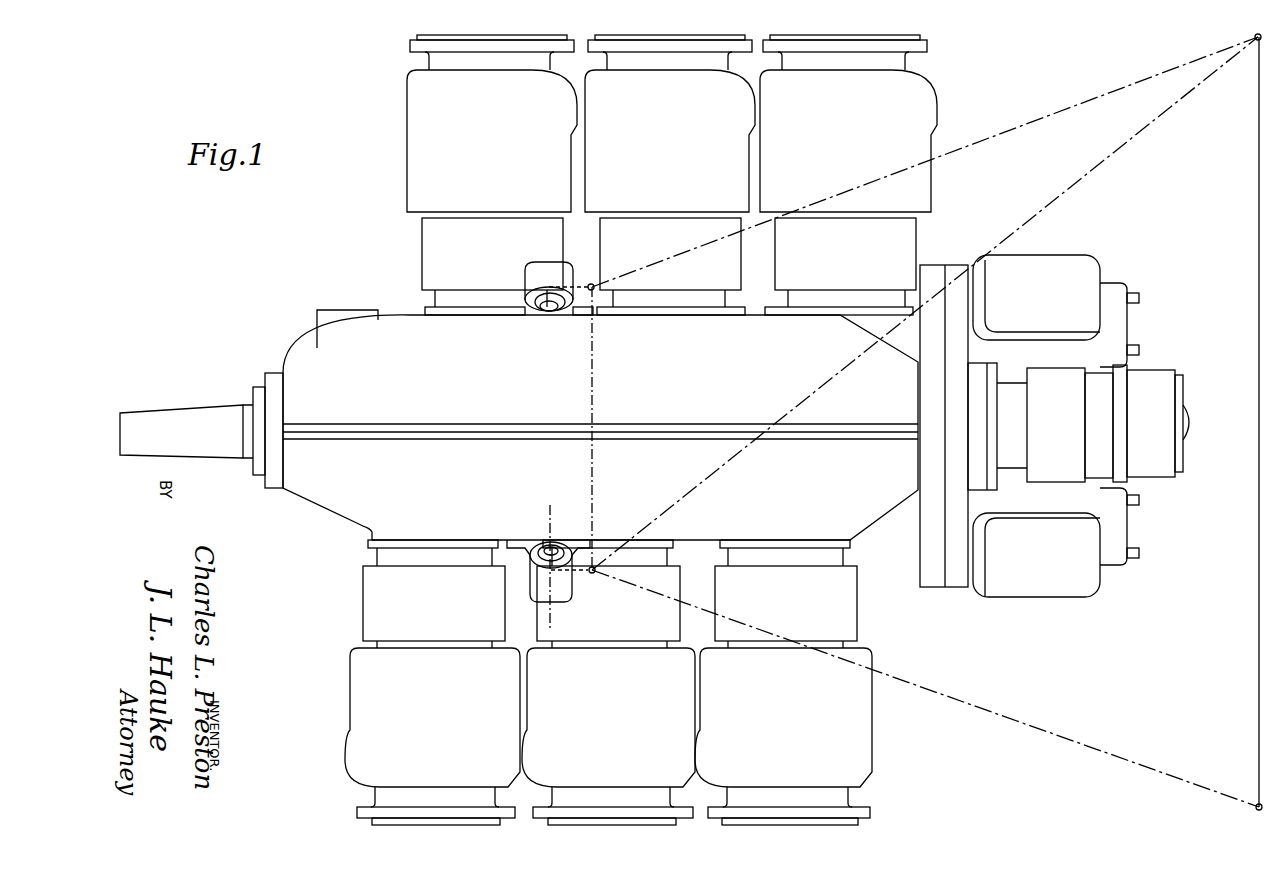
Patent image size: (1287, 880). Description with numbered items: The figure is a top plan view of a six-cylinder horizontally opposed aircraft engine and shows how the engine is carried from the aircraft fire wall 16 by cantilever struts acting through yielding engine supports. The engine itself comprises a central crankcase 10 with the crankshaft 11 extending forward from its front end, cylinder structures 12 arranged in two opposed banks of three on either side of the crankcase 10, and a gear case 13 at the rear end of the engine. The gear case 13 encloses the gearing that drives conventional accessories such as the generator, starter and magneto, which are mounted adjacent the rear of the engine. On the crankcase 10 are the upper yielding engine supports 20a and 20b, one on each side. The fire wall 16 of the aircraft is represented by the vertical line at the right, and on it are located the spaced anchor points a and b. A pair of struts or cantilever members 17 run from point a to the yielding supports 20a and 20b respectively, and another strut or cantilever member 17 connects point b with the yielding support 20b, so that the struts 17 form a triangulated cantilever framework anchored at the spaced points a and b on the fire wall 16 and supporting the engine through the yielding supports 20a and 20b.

The crankcase 10 is at (365, 358).
The crankshaft 11 is at (212, 415).
The cylinder structures 12 is at (405, 172).
The gear case 13 is at (1083, 348).
The fire wall 16 is at (1259, 642).
The struts 17 is at (1053, 112).
The yielding engine support 20a is at (524, 320).
The yielding engine support 20b is at (542, 537).
The spaced point a is at (1246, 40).
The spaced point b is at (1248, 813).